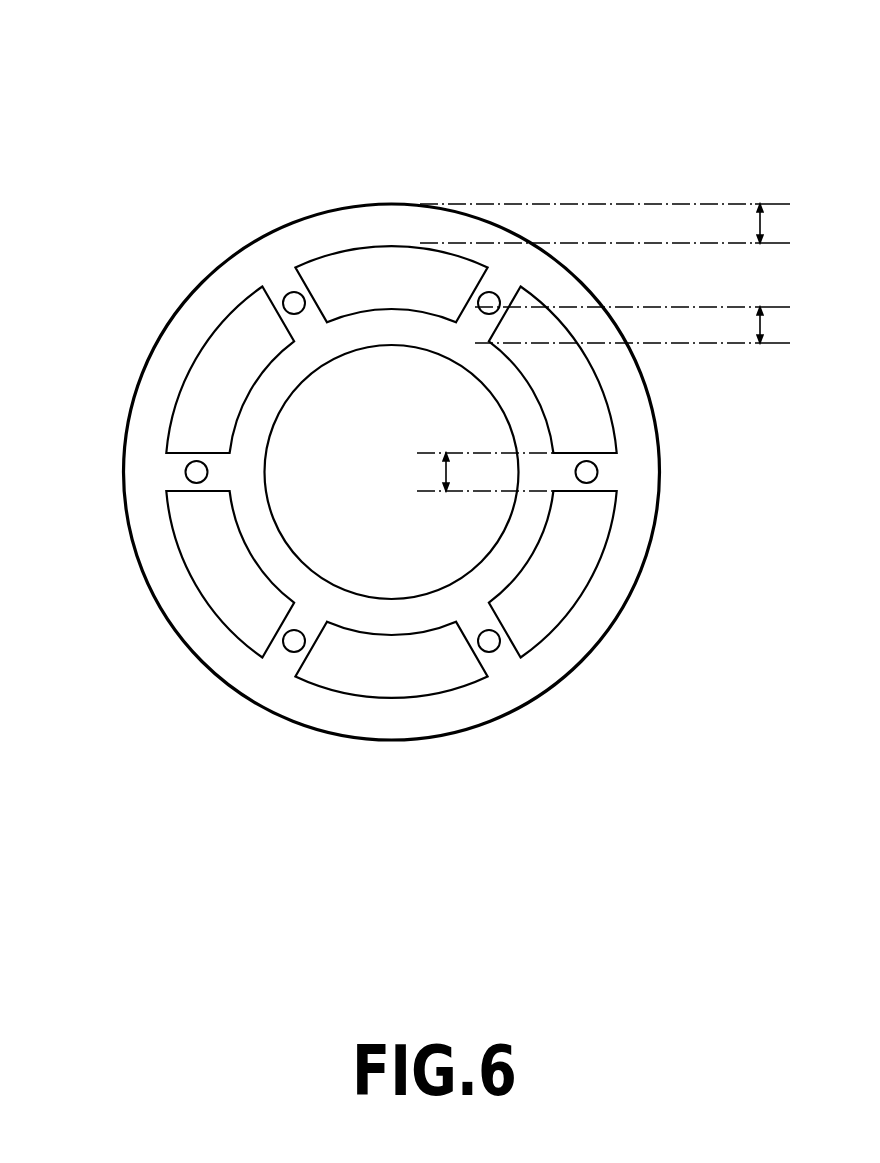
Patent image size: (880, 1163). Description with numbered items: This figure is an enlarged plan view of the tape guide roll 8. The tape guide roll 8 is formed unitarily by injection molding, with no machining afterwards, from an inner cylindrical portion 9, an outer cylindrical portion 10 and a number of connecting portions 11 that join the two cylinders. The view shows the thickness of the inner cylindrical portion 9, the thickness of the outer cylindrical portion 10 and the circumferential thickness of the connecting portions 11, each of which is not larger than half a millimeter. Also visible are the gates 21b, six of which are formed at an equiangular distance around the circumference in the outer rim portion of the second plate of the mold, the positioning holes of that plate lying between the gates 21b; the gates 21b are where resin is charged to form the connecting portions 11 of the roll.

The tape guide roll 8 is at (677, 161).
The inner cylindrical portion 9 is at (375, 618).
The outer cylindrical portion 10 is at (443, 720).
The connecting portions 11 is at (320, 292).
The gates 21b is at (286, 296).